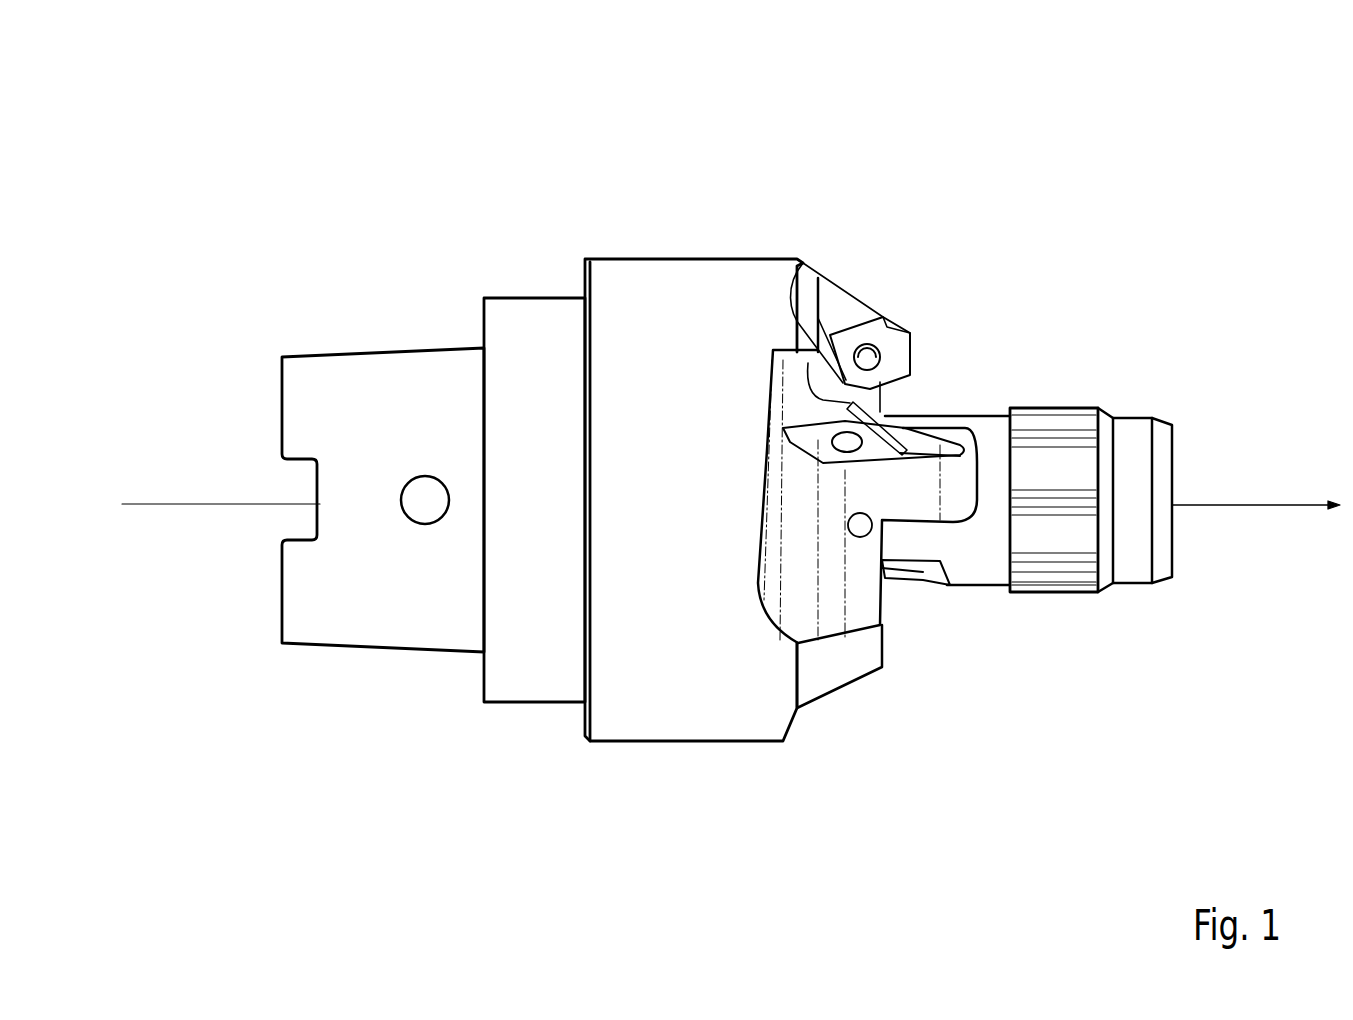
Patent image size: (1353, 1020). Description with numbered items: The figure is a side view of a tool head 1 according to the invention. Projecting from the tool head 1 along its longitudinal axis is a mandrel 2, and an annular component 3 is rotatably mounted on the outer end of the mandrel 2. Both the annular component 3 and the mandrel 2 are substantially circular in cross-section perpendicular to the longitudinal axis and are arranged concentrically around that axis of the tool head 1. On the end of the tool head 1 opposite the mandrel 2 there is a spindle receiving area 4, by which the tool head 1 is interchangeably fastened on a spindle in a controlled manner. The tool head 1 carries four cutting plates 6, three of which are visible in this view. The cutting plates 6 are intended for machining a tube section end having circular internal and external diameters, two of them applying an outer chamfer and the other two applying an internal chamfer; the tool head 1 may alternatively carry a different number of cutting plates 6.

The tool head 1 is at (718, 446).
The mandrel 2 is at (965, 513).
The annular component 3 is at (1077, 420).
The spindle receiving area 4 is at (318, 517).
The cutting plates 6 is at (887, 372).